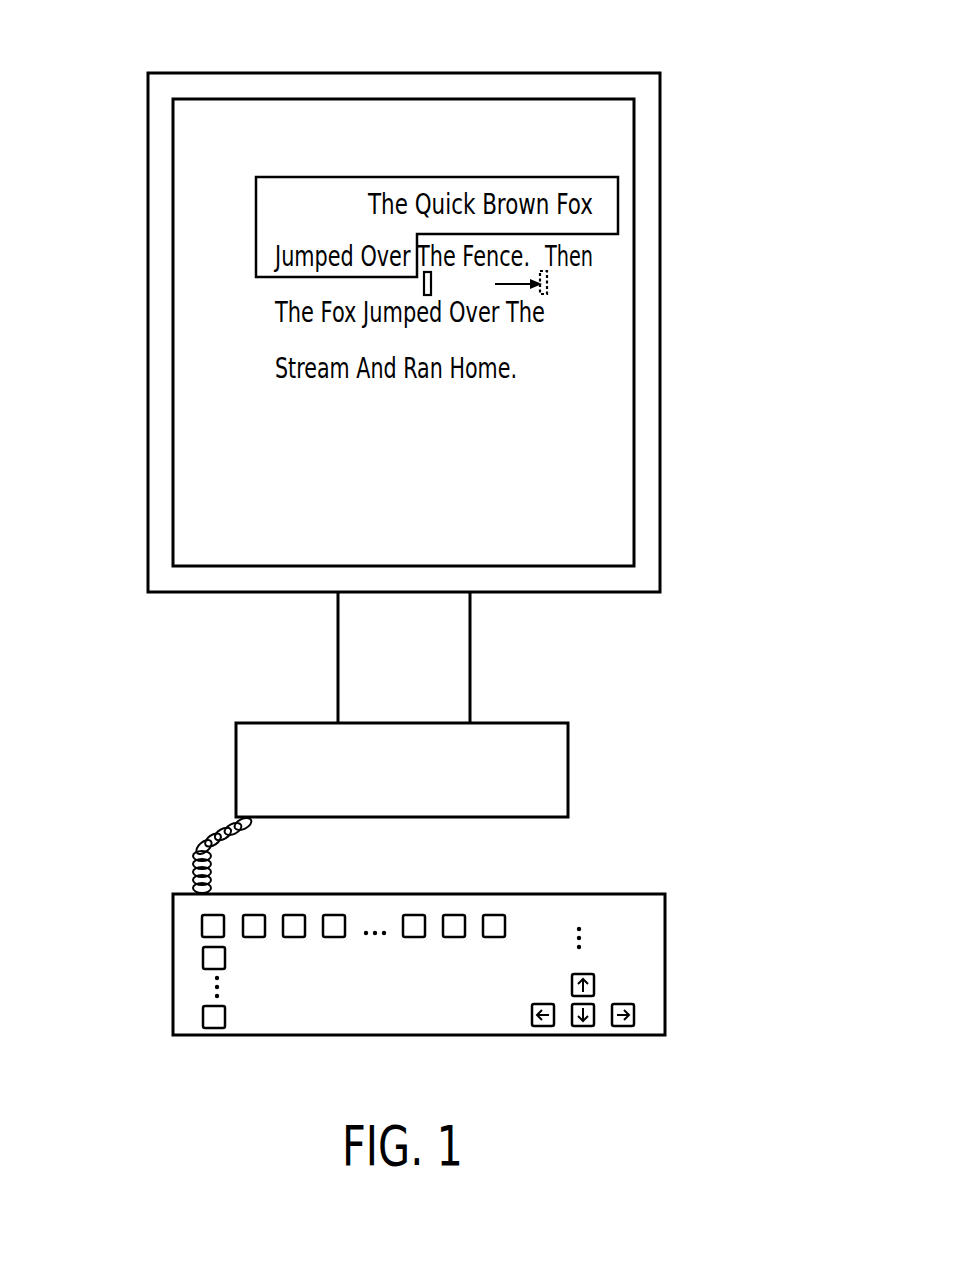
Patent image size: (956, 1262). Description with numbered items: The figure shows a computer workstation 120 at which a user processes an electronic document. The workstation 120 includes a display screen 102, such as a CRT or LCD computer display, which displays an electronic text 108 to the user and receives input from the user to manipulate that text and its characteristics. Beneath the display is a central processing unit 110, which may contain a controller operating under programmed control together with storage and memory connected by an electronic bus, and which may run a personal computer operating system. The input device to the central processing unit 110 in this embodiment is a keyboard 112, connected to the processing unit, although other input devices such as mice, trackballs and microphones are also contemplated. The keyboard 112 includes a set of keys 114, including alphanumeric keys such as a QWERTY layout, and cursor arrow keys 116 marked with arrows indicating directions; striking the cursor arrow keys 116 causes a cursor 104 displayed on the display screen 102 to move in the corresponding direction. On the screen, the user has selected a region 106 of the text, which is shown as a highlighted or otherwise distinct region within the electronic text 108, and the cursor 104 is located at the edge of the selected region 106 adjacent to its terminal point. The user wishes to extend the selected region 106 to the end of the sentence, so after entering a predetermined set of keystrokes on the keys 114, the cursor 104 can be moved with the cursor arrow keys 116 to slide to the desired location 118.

The display screen 102 is at (596, 73).
The cursor 104 is at (432, 276).
The selected region 106 is at (366, 176).
The electronic text 108 is at (208, 406).
The central processing unit 110 is at (571, 771).
The keyboard 112 is at (645, 893).
The keys 114 is at (187, 937).
The cursor arrow keys 116 is at (645, 988).
The desired location 118 is at (549, 289).
The workstation 120 is at (760, 574).